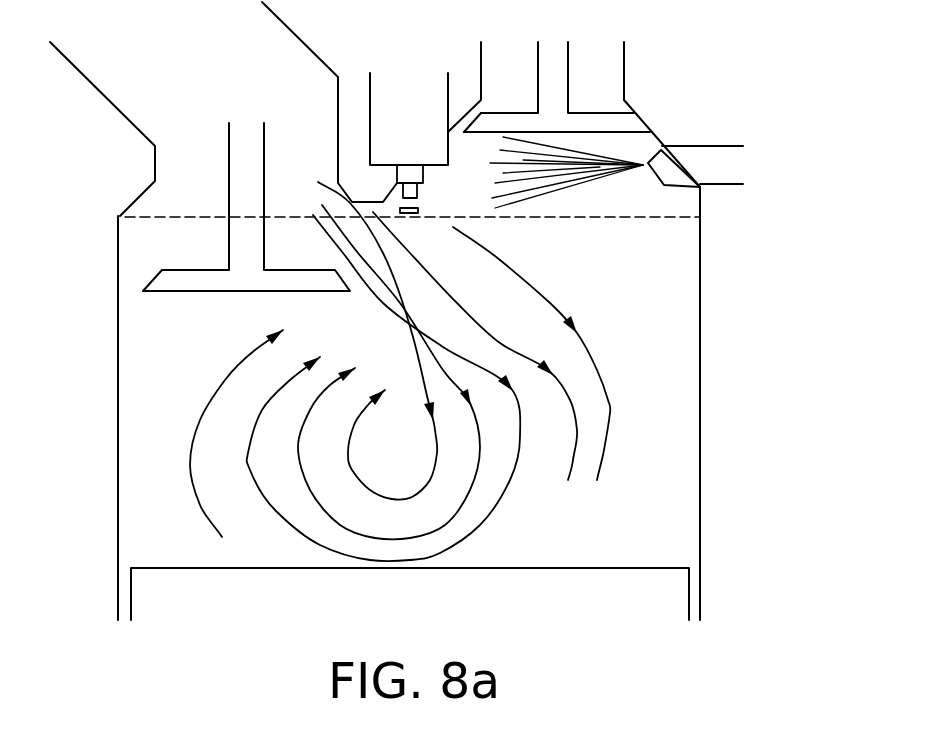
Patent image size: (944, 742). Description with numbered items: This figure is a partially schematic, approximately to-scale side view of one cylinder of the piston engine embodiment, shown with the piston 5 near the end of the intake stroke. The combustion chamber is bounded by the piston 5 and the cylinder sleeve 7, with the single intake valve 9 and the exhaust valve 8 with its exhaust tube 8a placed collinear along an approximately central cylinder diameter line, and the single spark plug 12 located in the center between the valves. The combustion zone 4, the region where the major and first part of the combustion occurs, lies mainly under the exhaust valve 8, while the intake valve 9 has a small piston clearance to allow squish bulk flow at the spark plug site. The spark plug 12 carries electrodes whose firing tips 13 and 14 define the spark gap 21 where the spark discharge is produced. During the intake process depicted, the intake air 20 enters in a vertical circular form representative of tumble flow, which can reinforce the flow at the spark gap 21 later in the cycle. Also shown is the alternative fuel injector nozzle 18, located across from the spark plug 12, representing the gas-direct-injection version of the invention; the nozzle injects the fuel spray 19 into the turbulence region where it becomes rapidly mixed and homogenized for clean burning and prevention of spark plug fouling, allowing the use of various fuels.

The combustion zone 4 is at (639, 205).
The piston 5 is at (626, 600).
The cylinder sleeve 7 is at (700, 341).
The exhaust valve 8 is at (613, 126).
The exhaust tube 8a is at (624, 58).
The intake valve 9 is at (193, 275).
The spark plug 12 is at (426, 135).
The firing tip 13 is at (420, 195).
The firing tip 14 is at (422, 211).
The fuel injector nozzle 18 is at (725, 146).
The fuel spray 19 is at (578, 187).
The intake air 20 is at (500, 357).
The spark gap 21 is at (418, 203).